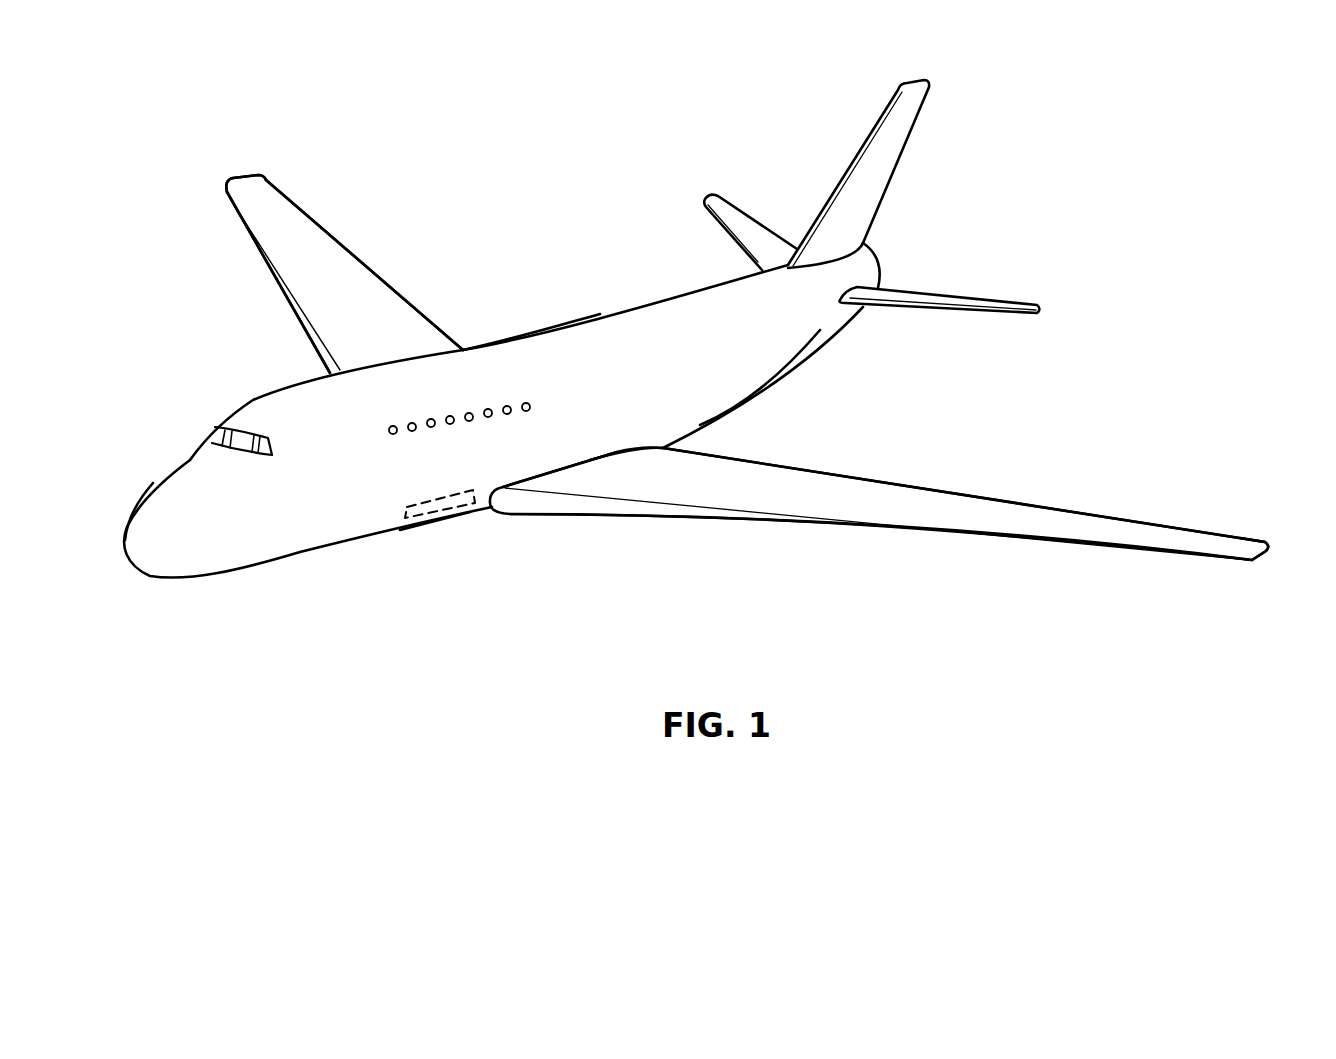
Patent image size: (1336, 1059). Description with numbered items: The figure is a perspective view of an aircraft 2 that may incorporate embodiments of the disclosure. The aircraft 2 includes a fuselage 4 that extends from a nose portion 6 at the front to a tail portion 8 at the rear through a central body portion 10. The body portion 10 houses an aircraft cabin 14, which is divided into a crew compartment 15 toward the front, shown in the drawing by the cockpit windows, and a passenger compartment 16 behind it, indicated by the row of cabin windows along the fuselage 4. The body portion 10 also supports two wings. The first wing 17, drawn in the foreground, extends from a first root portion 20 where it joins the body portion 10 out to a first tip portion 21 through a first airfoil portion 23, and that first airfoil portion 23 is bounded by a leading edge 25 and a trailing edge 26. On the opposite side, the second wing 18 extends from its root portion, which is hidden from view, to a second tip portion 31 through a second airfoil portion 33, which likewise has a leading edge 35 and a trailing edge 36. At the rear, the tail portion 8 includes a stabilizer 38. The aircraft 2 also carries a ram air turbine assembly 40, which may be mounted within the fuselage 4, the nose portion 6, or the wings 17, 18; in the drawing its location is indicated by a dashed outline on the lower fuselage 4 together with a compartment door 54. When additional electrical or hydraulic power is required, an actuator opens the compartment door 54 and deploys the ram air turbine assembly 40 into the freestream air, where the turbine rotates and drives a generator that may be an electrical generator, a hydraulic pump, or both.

The aircraft 2 is at (127, 408).
The fuselage 4 is at (280, 551).
The nose portion 6 is at (135, 549).
The tail portion 8 is at (820, 327).
The body portion 10 is at (717, 405).
The aircraft cabin 14 is at (519, 458).
The crew compartment 15 is at (222, 437).
The passenger compartment 16 is at (530, 350).
The first wing 17 is at (901, 535).
The second wing 18 is at (258, 194).
The first root portion 20 is at (618, 452).
The first tip portion 21 is at (1265, 552).
The first airfoil portion 23 is at (817, 490).
The leading edge 25 is at (690, 510).
The trailing edge 26 is at (927, 488).
The second tip portion 31 is at (227, 187).
The second airfoil portion 33 is at (300, 233).
The leading edge 35 is at (233, 210).
The trailing edge 36 is at (333, 237).
The stabilizer 38 is at (916, 286).
The ram air turbine (RAT) assembly 40 is at (444, 541).
The compartment door 54 is at (461, 512).